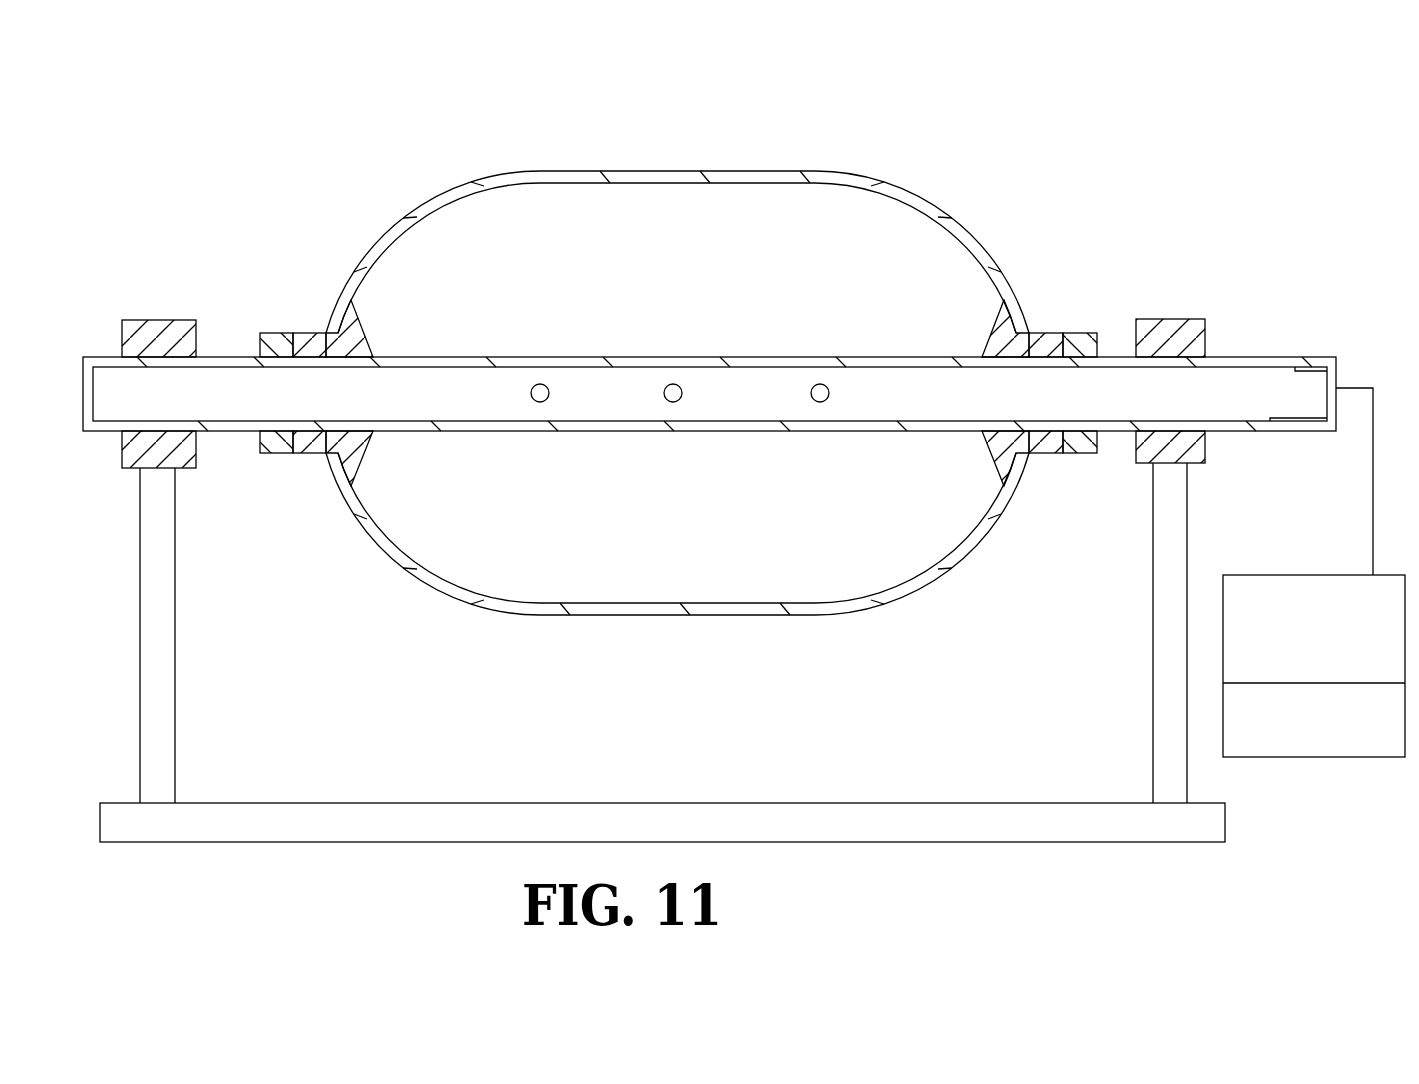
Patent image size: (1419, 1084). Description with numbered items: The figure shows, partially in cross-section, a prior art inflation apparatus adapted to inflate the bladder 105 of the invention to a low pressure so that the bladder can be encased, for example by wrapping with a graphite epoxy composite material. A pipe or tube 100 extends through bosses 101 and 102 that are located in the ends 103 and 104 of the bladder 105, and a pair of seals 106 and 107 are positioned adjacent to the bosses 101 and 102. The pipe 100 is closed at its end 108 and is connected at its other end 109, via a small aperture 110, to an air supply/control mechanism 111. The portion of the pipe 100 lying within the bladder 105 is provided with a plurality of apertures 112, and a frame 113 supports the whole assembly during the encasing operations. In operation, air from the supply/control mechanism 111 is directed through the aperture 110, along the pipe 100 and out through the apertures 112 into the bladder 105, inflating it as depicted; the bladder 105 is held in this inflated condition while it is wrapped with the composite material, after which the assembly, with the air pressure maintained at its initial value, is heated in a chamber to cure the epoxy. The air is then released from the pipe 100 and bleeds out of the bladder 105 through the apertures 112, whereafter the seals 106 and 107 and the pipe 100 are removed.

The pipe 100 is at (1240, 356).
The boss 101 is at (983, 330).
The boss 102 is at (369, 335).
The end of bladder 103 is at (985, 245).
The end of bladder 104 is at (399, 222).
The bladder 105 is at (735, 171).
The seal 106 is at (1092, 333).
The seal 107 is at (276, 333).
The end of pipe 108 is at (76, 372).
The end of pipe 109 is at (1337, 378).
The aperture 110 is at (1336, 393).
The air supply/control mechanism 111 is at (1283, 575).
The apertures 112 is at (667, 385).
The frame 113 is at (1153, 690).